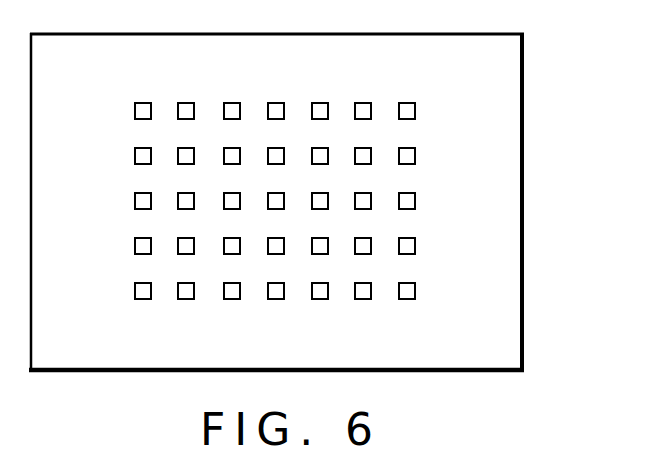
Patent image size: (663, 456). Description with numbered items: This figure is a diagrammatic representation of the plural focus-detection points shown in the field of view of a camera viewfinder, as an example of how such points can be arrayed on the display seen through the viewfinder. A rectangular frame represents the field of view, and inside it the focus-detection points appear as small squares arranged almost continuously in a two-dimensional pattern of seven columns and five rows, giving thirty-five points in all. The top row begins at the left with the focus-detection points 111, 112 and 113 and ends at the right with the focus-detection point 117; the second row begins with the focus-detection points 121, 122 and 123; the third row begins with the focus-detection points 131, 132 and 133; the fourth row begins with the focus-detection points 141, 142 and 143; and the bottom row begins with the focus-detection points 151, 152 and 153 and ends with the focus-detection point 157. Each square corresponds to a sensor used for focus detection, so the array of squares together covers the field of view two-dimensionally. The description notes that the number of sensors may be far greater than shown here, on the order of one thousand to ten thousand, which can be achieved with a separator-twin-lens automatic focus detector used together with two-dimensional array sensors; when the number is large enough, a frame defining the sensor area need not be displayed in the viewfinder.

The focus-detection point 111 is at (144, 98).
The focus-detection point 112 is at (188, 98).
The focus-detection point 113 is at (233, 98).
The focus-detection point 117 is at (407, 98).
The focus-detection point 121 is at (145, 143).
The focus-detection point 122 is at (189, 143).
The focus-detection point 123 is at (234, 143).
The focus-detection point 131 is at (145, 188).
The focus-detection point 132 is at (188, 188).
The focus-detection point 133 is at (233, 188).
The focus-detection point 141 is at (145, 233).
The focus-detection point 142 is at (188, 233).
The focus-detection point 143 is at (233, 233).
The focus-detection point 151 is at (145, 278).
The focus-detection point 152 is at (188, 278).
The focus-detection point 153 is at (233, 278).
The focus-detection point 157 is at (407, 278).